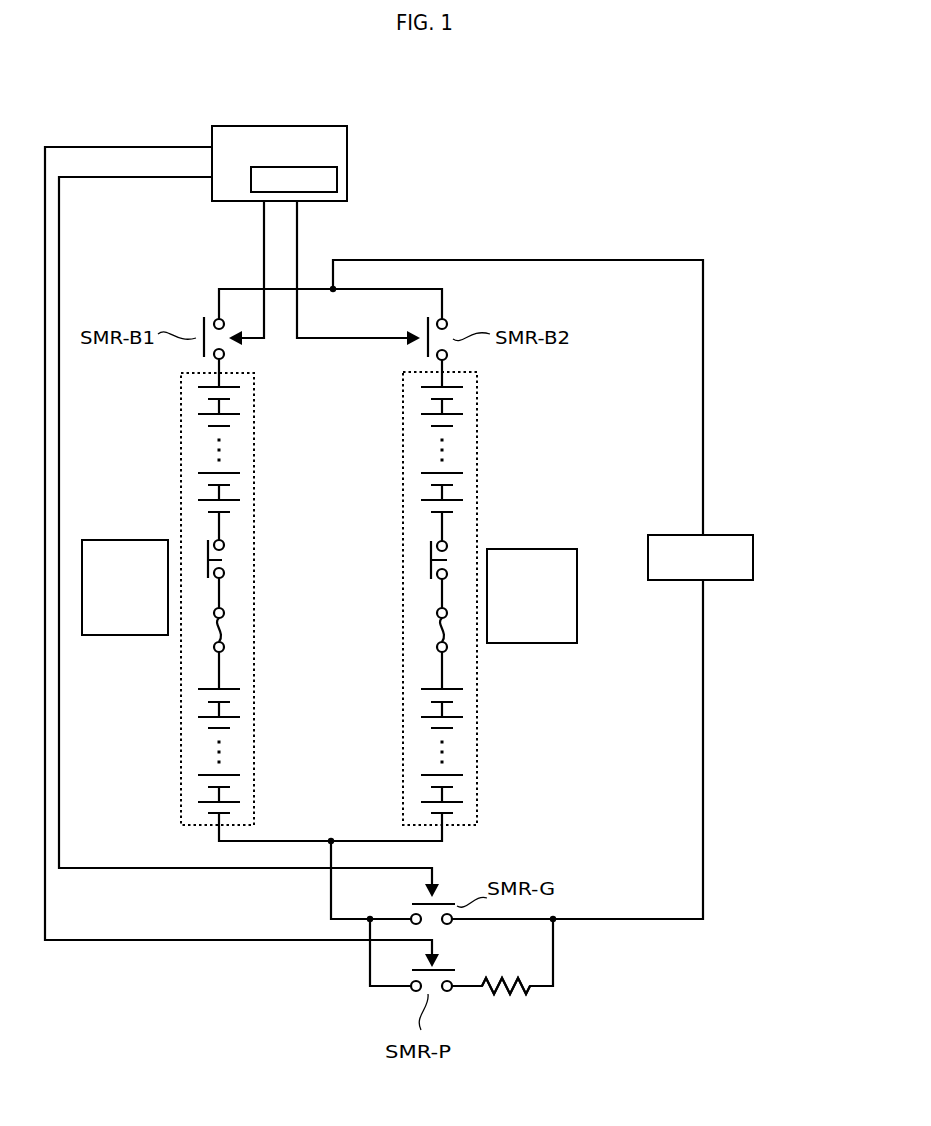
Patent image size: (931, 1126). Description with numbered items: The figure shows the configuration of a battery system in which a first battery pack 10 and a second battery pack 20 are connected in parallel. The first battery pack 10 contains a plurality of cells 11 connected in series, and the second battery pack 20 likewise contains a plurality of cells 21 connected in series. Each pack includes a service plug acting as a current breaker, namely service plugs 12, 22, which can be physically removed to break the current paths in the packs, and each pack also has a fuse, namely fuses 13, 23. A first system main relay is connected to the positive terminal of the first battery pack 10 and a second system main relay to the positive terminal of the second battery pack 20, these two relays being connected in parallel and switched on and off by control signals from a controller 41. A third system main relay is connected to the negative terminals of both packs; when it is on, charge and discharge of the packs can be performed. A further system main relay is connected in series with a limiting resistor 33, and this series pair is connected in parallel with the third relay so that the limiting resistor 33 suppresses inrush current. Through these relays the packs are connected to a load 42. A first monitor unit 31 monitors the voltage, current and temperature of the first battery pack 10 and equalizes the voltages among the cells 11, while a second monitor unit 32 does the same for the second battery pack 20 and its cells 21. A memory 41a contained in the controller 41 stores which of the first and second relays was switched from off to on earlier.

The first battery pack 10 is at (181, 394).
The cells 11 is at (235, 397).
The service plug 12 is at (235, 562).
The fuse 13 is at (235, 637).
The second battery pack 20 is at (477, 394).
The cells 21 is at (420, 395).
The service plug 22 is at (422, 559).
The fuse 23 is at (422, 633).
The first monitor unit 31 is at (122, 540).
The second monitor unit 32 is at (535, 549).
The limiting resistor 33 is at (513, 995).
The controller 41 is at (347, 140).
The memory 41a is at (337, 182).
The load 42 is at (753, 556).